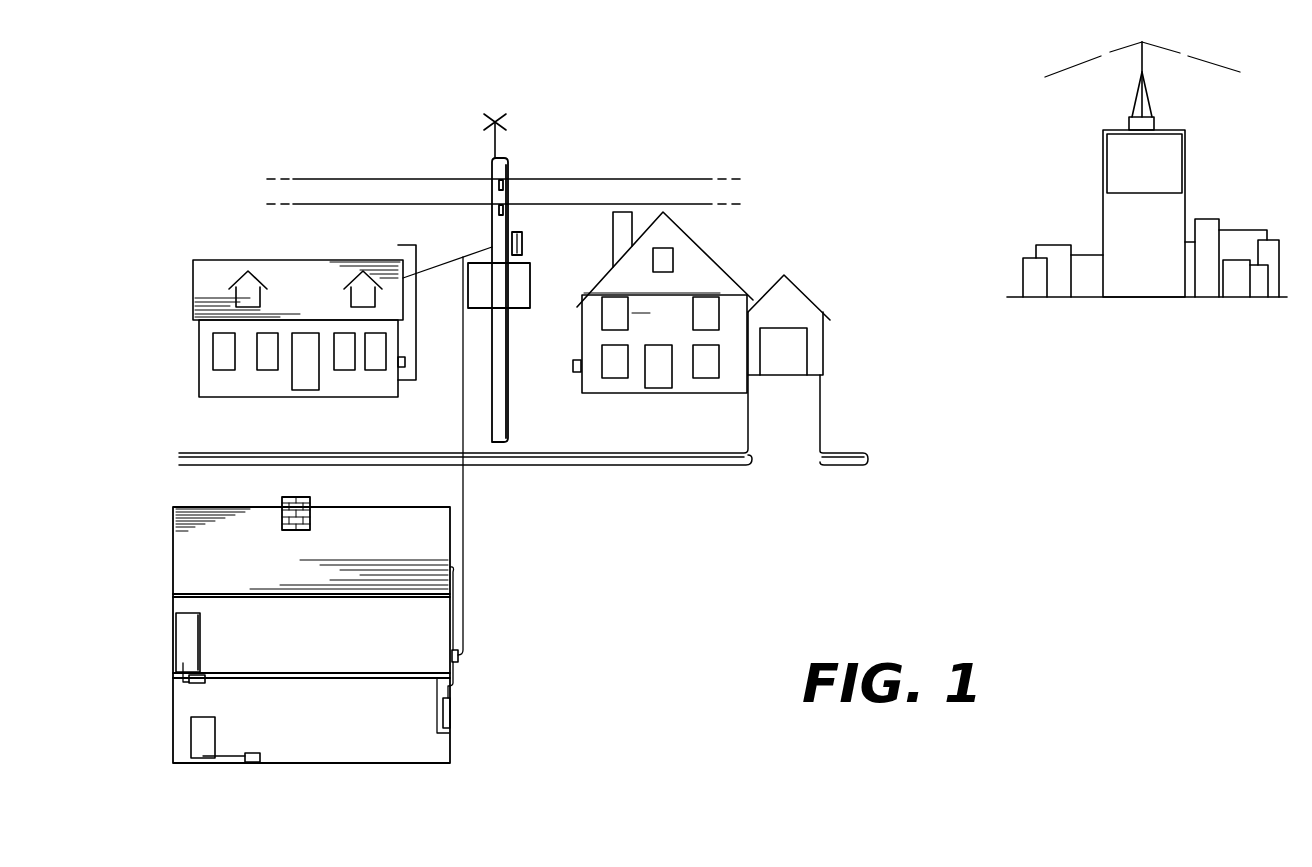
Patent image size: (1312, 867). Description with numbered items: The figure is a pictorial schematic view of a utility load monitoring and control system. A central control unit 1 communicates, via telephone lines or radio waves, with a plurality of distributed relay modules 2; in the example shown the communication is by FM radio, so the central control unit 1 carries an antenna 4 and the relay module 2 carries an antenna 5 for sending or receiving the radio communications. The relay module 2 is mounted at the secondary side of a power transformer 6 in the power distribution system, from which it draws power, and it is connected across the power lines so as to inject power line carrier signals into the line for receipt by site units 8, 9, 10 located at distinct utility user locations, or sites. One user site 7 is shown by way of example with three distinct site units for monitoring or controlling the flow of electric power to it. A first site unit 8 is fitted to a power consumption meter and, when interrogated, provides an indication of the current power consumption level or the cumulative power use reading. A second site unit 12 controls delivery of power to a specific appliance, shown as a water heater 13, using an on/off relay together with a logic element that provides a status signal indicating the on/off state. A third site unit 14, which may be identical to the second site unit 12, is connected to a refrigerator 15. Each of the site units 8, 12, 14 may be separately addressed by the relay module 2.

The central control unit 1 is at (1140, 194).
The relay module 2 is at (530, 296).
The antenna 4 is at (1143, 46).
The antenna 5 is at (495, 115).
The power transformer 6 is at (522, 236).
The user site 7 is at (450, 702).
The first site unit 8 is at (458, 656).
The site unit 9 is at (573, 366).
The site unit 10 is at (405, 362).
The second site unit 12 is at (257, 753).
The water heater 13 is at (208, 736).
The third site unit 14 is at (199, 685).
The refrigerator 15 is at (190, 643).